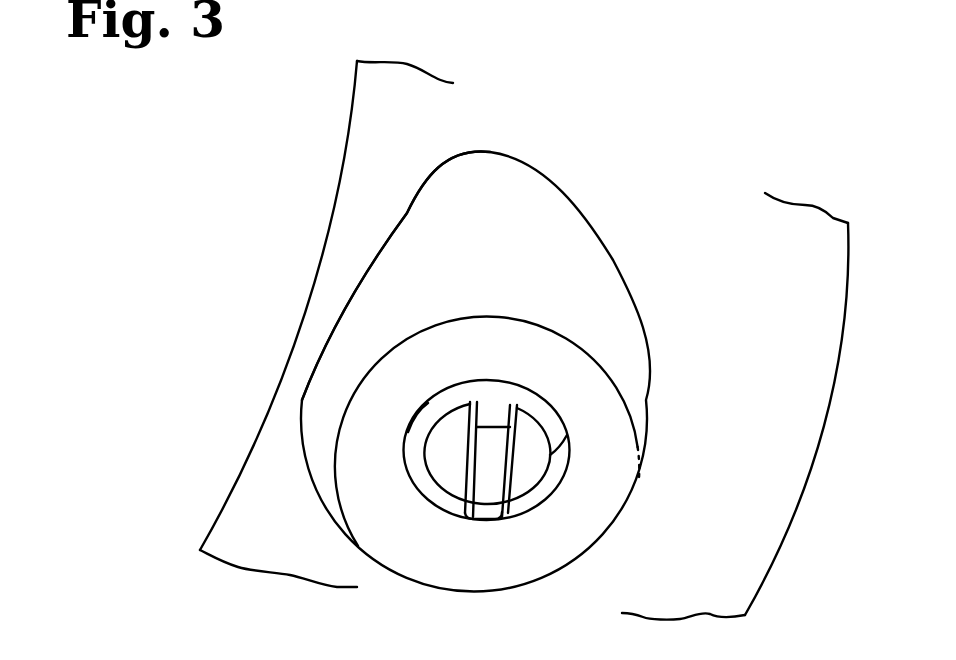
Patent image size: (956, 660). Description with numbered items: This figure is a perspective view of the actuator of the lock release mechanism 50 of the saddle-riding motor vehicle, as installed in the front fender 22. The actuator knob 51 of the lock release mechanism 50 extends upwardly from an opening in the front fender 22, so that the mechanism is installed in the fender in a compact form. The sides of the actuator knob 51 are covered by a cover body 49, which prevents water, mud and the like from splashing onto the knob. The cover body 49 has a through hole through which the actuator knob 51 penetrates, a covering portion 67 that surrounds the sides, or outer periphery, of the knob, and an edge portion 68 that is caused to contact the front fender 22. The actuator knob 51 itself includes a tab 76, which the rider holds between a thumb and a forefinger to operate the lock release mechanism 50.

The front fender 22 is at (316, 274).
The cover body 49 is at (302, 373).
The edge portion 68 is at (303, 428).
The covering portion 67 is at (640, 404).
The lock release mechanism 50 is at (533, 368).
The actuator knob 51 is at (537, 392).
The tab 76 is at (490, 398).